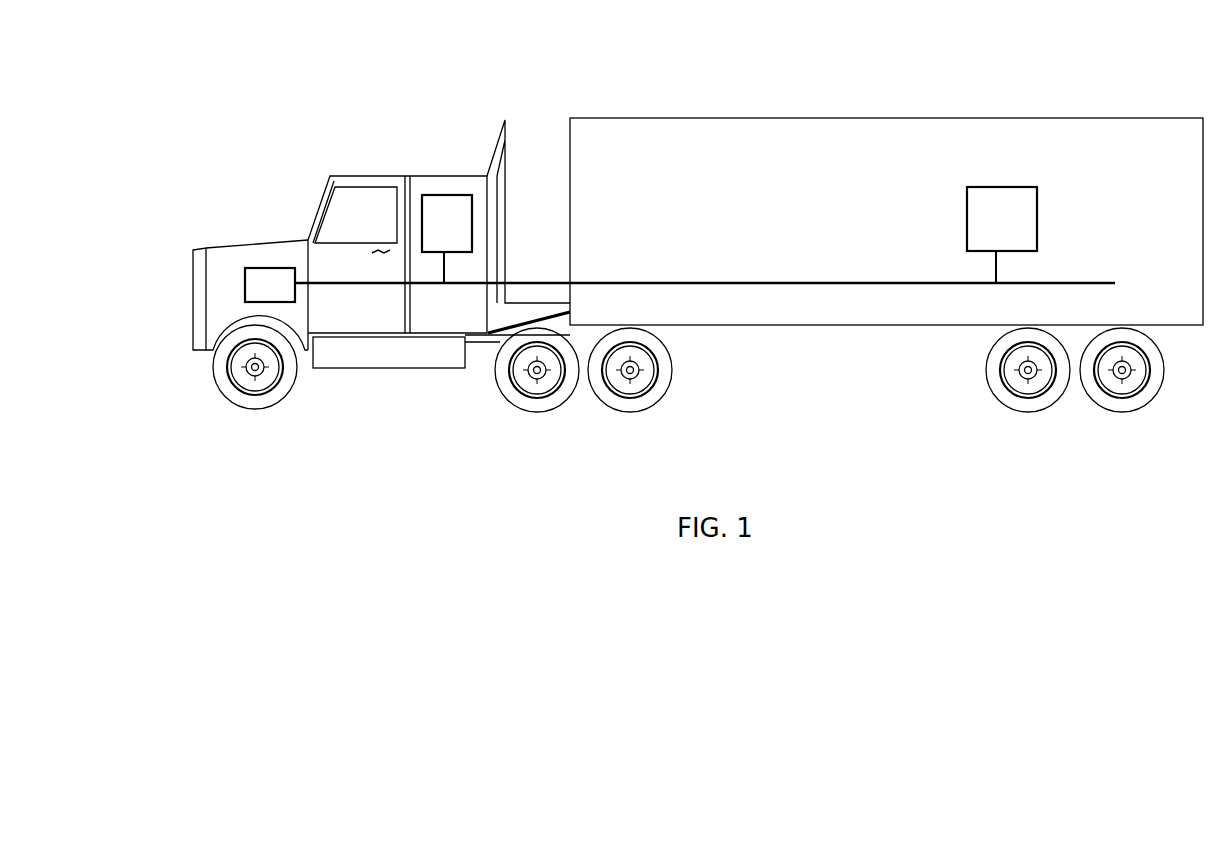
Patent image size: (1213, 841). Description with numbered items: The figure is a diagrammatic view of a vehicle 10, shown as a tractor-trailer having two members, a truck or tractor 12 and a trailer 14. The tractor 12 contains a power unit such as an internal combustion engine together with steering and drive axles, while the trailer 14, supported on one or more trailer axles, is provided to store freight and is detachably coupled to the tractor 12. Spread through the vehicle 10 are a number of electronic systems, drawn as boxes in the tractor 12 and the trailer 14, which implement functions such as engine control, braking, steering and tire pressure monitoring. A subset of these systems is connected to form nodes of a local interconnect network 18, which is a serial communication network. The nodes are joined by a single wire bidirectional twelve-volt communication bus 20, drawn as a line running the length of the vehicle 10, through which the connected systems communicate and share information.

The vehicle 10 is at (388, 101).
The tractor 12 is at (205, 250).
The trailer 14 is at (733, 133).
The local interconnect network 18 is at (811, 252).
The communication bus 20 is at (767, 287).